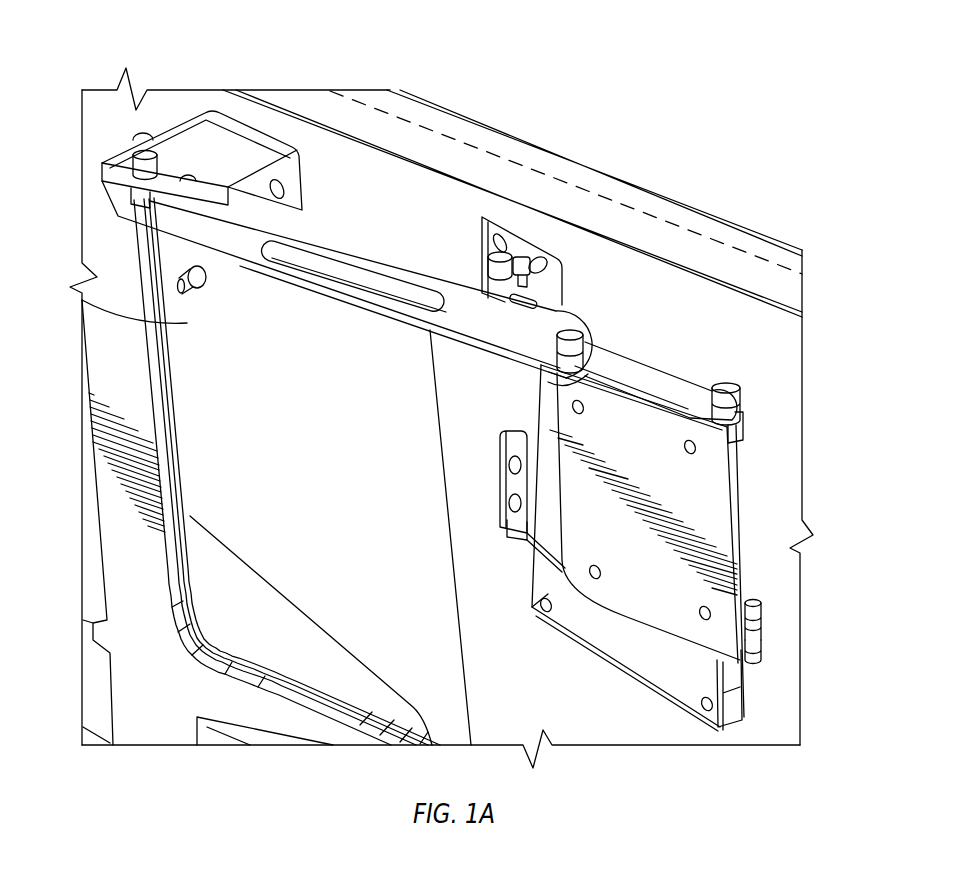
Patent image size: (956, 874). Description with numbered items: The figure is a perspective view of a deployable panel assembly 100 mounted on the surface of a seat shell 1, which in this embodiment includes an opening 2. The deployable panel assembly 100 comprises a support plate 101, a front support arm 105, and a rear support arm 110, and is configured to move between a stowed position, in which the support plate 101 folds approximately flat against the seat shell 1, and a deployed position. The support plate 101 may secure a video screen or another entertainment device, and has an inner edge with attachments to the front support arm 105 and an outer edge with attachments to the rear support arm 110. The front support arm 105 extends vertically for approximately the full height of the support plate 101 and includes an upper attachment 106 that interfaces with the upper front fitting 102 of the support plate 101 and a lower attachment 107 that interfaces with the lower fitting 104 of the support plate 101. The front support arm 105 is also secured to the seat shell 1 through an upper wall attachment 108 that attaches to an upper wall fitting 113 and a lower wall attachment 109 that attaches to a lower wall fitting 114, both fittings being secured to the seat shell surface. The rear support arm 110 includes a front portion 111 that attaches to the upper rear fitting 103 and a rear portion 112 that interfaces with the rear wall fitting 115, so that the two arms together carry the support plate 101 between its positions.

The deployable panel assembly 100 is at (184, 66).
The seat shell 1 is at (594, 717).
The opening 2 is at (187, 322).
The rear wall fitting 115 is at (223, 130).
The rear support arm 110 is at (312, 245).
The rear portion 112 is at (157, 201).
The upper wall fitting 113 is at (507, 240).
The upper wall attachment 108 is at (507, 287).
The upper rear fitting 103 is at (575, 360).
The front portion 111 is at (543, 358).
The front support arm 105 is at (652, 360).
The upper attachment 106 is at (741, 403).
The upper front fitting 102 is at (746, 423).
The support plate 101 is at (722, 528).
The lower attachment 107 is at (762, 624).
The lower fitting 104 is at (760, 652).
The lower wall fitting 114 is at (507, 450).
The lower wall attachment 109 is at (513, 530).